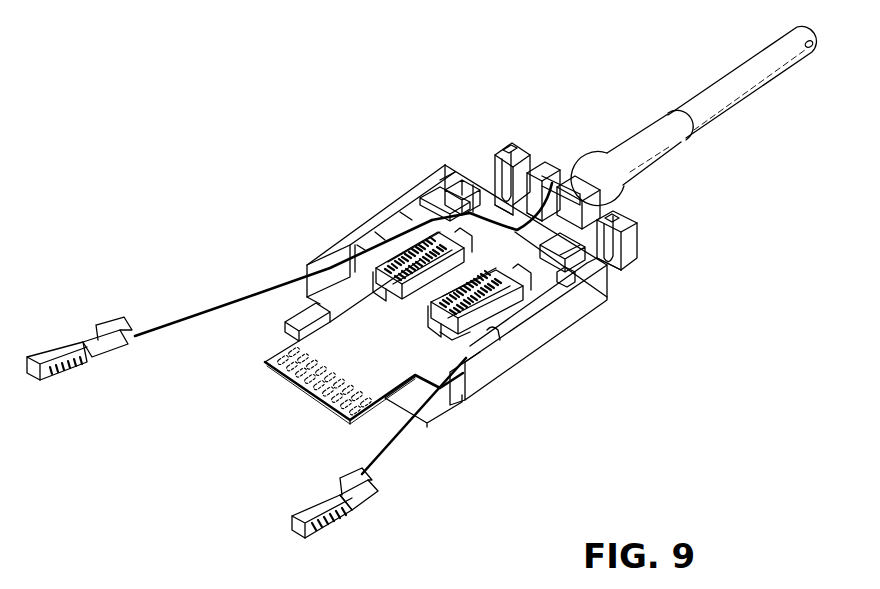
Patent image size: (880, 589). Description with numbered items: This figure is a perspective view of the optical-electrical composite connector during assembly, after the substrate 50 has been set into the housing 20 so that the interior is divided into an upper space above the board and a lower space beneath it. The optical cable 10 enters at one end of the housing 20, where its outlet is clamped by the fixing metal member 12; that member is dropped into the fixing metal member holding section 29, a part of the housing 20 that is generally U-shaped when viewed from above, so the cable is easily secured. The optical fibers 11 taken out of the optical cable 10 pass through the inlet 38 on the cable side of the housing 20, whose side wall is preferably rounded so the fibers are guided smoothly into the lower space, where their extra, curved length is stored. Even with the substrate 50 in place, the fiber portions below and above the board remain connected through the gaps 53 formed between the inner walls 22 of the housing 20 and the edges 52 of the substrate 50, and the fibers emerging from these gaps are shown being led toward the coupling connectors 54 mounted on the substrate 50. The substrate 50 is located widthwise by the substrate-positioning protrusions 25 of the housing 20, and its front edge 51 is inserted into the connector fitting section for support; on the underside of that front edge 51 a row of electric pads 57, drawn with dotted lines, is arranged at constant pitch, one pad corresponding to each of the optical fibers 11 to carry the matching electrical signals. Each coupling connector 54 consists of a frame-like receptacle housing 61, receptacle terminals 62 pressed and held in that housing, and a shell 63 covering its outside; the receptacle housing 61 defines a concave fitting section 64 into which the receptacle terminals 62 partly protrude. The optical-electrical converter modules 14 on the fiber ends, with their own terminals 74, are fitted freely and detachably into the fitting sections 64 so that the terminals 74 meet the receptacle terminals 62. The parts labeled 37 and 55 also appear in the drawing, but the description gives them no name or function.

The optical cable 10 is at (719, 92).
The optical fibers 11 is at (192, 318).
The fixing metal member 12 is at (556, 176).
The optical-electrical converter module 14 is at (55, 357).
The housing 20 is at (575, 318).
The inner walls 22 is at (363, 217).
The substrate-positioning protrusions 25 is at (318, 297).
The fixing metal member holding section 29 is at (545, 176).
The board-side connector 37 is at (505, 320).
The inlet 38 is at (560, 238).
The substrate 50 is at (292, 390).
The front edge 51 is at (322, 402).
The edges 52 is at (407, 217).
The gaps 53 is at (368, 242).
The coupling connectors 54 is at (383, 237).
The retaining bracket 55 is at (447, 217).
The electric pads 57 is at (272, 352).
The receptacle housing 61 is at (470, 336).
The receptacle terminals 62 is at (520, 330).
The shell 63 is at (472, 332).
The fitting section 64 is at (477, 217).
The terminals 74 is at (332, 522).